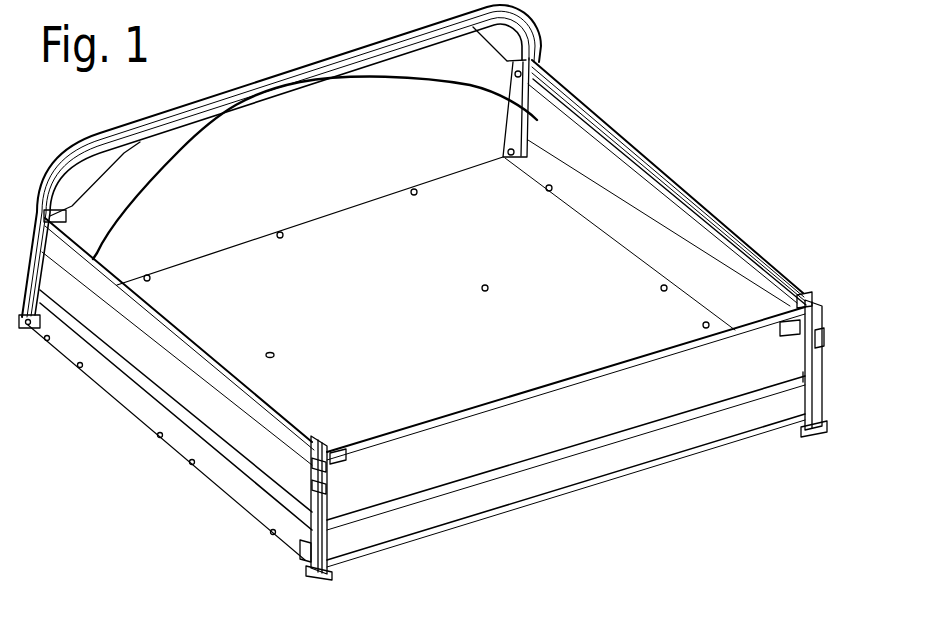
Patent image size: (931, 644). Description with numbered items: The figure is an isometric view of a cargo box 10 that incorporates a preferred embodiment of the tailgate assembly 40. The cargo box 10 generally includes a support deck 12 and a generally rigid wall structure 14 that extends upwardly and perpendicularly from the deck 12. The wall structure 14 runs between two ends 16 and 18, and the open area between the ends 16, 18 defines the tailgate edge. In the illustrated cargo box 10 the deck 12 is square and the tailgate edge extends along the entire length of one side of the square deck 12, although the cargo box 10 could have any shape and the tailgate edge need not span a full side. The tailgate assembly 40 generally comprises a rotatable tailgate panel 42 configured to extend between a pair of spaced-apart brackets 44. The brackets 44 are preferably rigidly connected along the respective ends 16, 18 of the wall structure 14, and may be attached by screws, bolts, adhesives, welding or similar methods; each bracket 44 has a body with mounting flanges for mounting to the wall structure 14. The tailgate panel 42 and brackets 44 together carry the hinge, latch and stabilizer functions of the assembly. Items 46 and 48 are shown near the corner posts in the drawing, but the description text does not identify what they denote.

The cargo box 10 is at (654, 93).
The support deck 12 is at (415, 309).
The wall structure 14 is at (291, 104).
The end of wall structure 16 is at (301, 544).
The end of wall structure 18 is at (803, 293).
The tailgate assembly 40 is at (534, 515).
The tailgate panel 42 is at (668, 453).
The brackets 44 is at (317, 587).
The front corner post 46 is at (338, 532).
The latch hook 48 is at (803, 382).